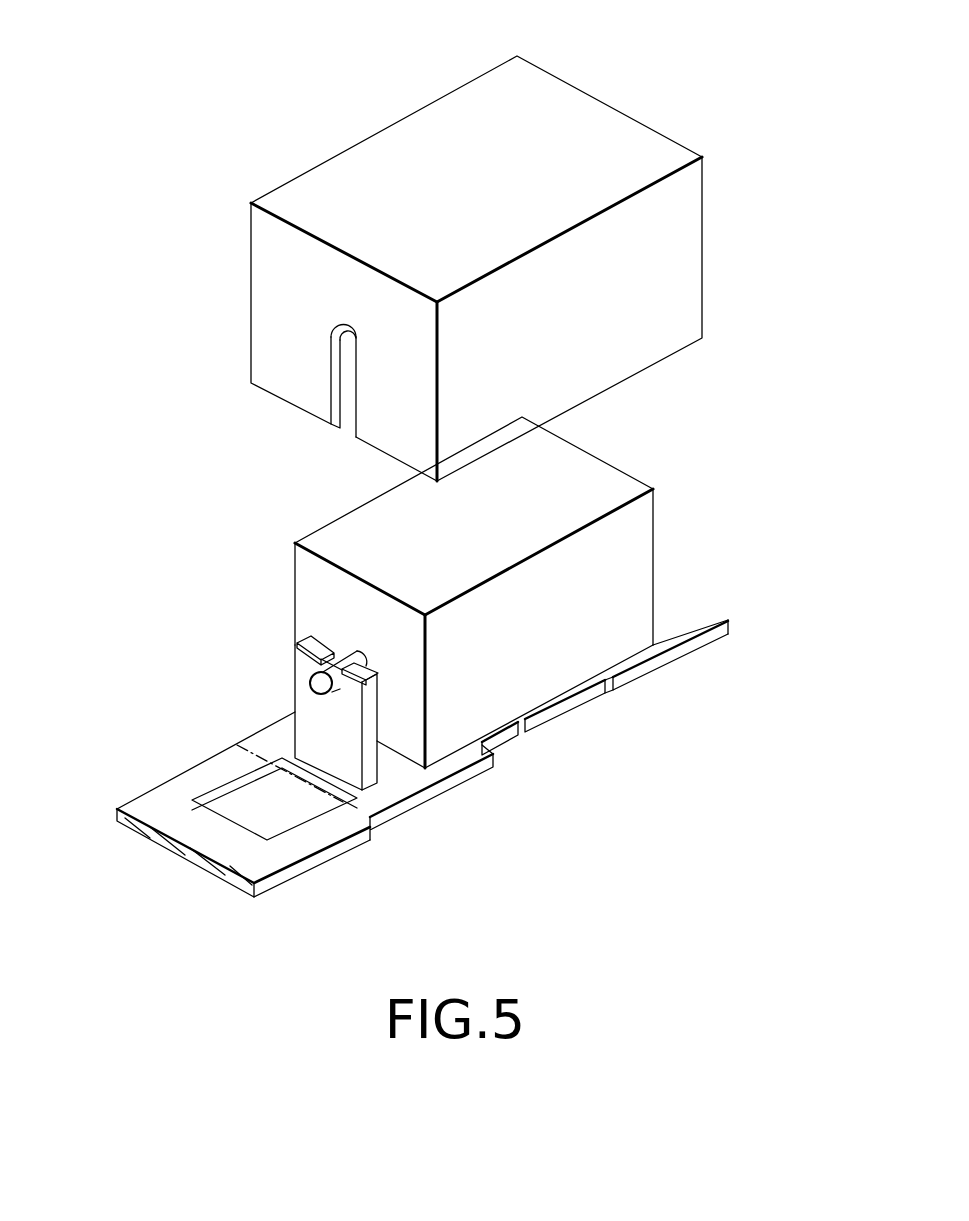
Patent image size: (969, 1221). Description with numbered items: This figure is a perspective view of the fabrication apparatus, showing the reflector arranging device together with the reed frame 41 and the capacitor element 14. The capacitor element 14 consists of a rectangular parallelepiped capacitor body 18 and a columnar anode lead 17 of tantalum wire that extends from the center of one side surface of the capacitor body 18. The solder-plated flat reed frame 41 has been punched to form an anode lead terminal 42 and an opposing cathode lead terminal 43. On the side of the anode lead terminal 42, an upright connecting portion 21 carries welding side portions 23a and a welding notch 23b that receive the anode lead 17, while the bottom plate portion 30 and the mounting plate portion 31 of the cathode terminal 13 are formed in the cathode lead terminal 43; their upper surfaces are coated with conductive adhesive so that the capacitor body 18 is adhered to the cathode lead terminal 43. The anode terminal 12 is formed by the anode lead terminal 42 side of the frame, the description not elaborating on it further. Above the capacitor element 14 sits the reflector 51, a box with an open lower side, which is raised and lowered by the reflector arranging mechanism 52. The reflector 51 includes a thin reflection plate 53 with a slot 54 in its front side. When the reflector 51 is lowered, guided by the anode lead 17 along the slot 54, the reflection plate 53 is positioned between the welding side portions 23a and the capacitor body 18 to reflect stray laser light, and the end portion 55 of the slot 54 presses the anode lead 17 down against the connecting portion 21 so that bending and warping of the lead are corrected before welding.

The base plate 12 is at (588, 738).
The cathode terminal 13 is at (646, 683).
The capacitor element 14 is at (536, 582).
The anode lead 17 is at (316, 684).
The capacitor body 18 is at (640, 550).
The connecting portion 21 is at (337, 713).
The welding side portions 23a is at (302, 660).
The welding notch 23b is at (336, 668).
The bottom plate portion 30 is at (676, 667).
The mounting plate portion 31 is at (560, 714).
The reed frame 41 is at (226, 828).
The anode lead terminal 42 is at (312, 870).
The cathode lead terminal 43 is at (723, 644).
The reflector 51 is at (417, 269).
The reflector arranging mechanism 52 is at (417, 241).
The reflection plate 53 is at (265, 322).
The slot 54 is at (356, 405).
The end portion 55 is at (350, 338).